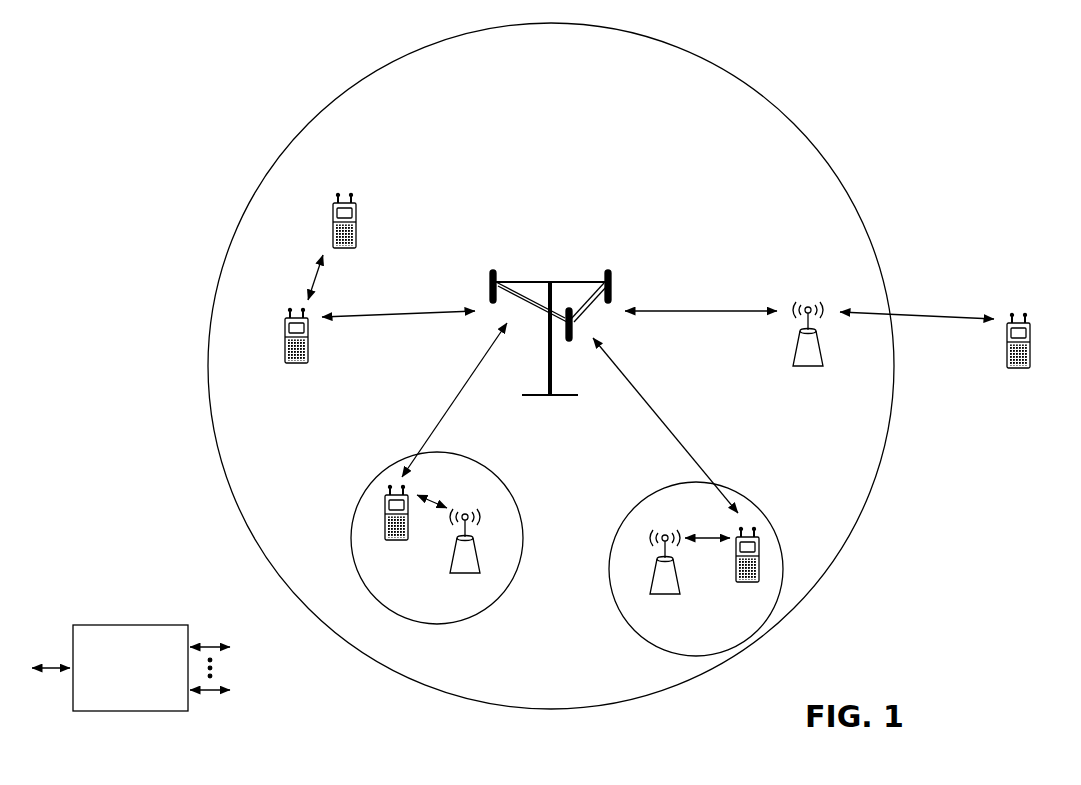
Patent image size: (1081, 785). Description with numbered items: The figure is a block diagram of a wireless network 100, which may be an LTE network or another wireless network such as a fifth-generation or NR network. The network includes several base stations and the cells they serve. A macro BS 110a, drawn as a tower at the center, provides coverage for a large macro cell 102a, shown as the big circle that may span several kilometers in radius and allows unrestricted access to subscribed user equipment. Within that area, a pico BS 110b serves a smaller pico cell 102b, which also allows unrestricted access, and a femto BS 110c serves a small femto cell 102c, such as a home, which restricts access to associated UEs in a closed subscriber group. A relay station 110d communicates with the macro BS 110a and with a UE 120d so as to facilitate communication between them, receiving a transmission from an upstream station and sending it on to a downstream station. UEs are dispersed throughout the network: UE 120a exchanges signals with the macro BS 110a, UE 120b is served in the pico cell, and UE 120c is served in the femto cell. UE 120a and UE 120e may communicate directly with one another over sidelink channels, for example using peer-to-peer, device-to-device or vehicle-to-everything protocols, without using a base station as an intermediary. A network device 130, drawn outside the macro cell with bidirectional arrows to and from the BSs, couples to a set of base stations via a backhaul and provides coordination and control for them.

The wireless network 100 is at (932, 96).
The macro cell 102a is at (779, 110).
The pico cell 102b is at (500, 482).
The femto cell 102c is at (628, 514).
The macro BS 110a is at (555, 282).
The pico BS 110b is at (477, 560).
The femto BS 110c is at (652, 579).
The relay station 110d is at (809, 305).
The UE 120a is at (285, 325).
The UE 120b is at (385, 535).
The UE 120c is at (736, 577).
The UE 120d is at (1030, 332).
The UE 120e is at (333, 210).
The network device 130 is at (129, 625).